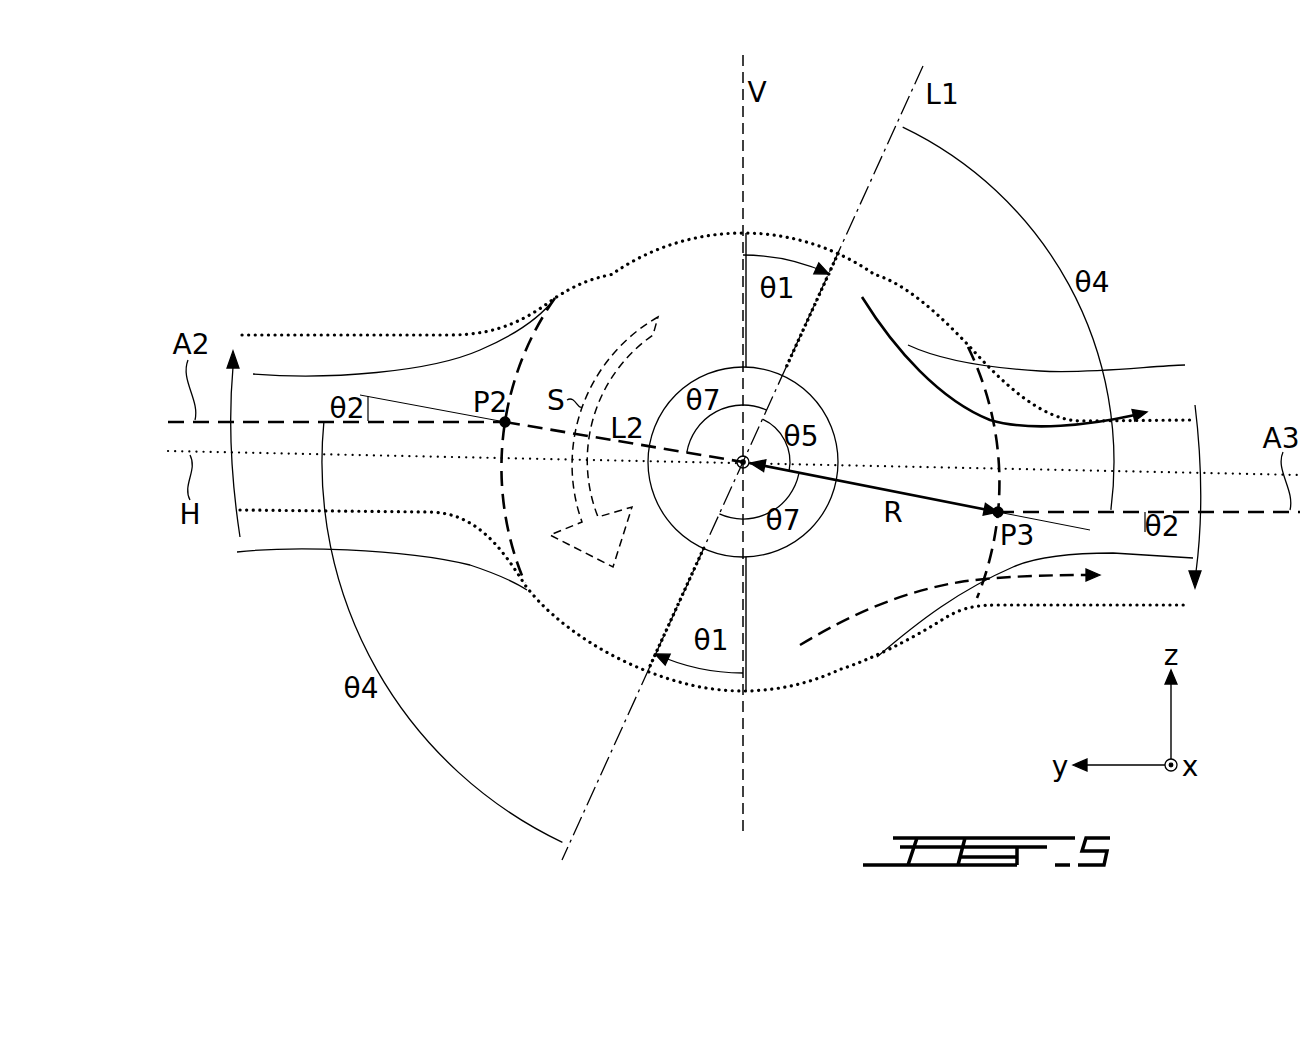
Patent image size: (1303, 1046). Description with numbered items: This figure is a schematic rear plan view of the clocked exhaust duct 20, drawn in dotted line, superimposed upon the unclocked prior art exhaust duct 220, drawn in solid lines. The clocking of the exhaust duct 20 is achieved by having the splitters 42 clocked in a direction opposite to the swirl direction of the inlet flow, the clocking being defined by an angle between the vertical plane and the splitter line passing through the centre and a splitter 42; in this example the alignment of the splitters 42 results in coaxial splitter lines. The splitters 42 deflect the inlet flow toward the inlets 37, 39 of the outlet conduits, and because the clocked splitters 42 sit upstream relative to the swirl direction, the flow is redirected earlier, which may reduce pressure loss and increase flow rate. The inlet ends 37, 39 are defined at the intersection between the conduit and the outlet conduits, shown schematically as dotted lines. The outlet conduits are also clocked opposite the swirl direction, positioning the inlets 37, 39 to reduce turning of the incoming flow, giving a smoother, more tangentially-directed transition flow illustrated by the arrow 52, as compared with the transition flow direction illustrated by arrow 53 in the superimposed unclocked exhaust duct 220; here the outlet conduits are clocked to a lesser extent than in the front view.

The exhaust duct 20 is at (305, 333).
The unclocked prior art exhaust duct 220 is at (412, 373).
The inlet end 37 is at (500, 448).
The inlet end 39 is at (1002, 492).
The splitter 42 is at (830, 296).
The arrow 52 is at (908, 595).
The arrow 53 is at (948, 398).